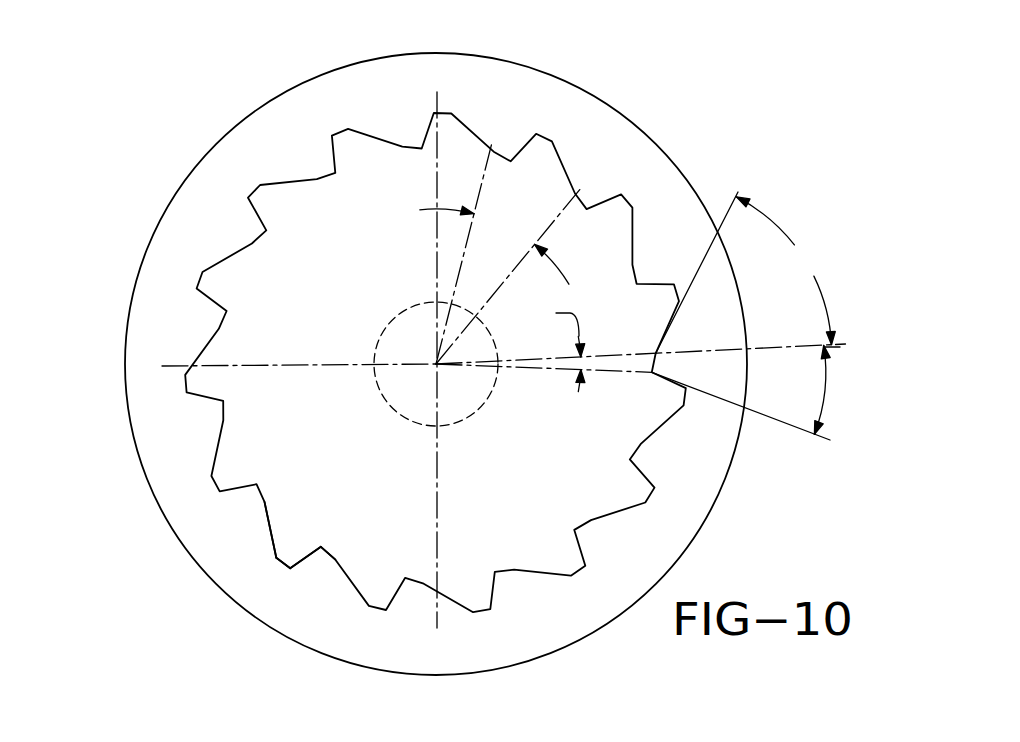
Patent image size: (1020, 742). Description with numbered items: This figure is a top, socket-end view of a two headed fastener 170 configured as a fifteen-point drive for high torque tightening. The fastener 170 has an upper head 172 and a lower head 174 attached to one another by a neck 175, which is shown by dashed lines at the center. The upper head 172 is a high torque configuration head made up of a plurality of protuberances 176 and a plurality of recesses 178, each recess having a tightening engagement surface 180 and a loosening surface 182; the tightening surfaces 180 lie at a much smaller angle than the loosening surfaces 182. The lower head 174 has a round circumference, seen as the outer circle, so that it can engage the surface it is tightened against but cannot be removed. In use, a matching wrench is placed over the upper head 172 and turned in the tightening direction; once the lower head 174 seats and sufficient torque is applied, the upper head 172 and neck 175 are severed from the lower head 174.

The two headed fastener 170 is at (189, 132).
The upper head 172 is at (195, 290).
The lower head 174 is at (160, 212).
The neck 175 is at (397, 313).
The protuberances 176 is at (283, 565).
The recesses 178 is at (332, 550).
The tightening engagement surfaces 180 is at (307, 558).
The loosening surfaces 182 is at (272, 533).